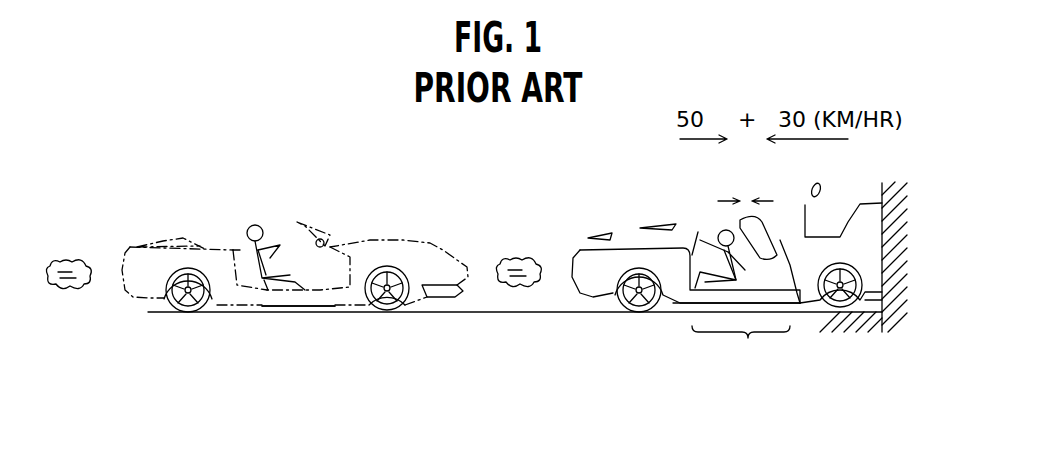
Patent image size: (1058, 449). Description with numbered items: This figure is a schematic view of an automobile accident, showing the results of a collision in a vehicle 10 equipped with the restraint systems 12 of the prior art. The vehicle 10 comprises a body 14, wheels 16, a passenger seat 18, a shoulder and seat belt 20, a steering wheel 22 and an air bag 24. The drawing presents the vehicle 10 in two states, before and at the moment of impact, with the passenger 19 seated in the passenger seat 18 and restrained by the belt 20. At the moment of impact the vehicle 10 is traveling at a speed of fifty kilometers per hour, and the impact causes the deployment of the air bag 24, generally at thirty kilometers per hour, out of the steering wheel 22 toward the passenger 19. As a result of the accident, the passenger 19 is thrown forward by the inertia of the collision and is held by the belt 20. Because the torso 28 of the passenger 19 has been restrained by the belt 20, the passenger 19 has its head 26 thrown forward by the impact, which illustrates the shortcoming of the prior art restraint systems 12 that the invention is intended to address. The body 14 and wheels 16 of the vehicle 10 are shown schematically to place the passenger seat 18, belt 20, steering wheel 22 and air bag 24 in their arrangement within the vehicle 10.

The vehicle 10 is at (433, 237).
The restraint systems 12 is at (741, 350).
The body 14 is at (332, 300).
The wheels 16 is at (155, 313).
The passenger seat 18 is at (237, 247).
The passenger 19 is at (260, 233).
The shoulder and seat belt 20 is at (260, 240).
The steering wheel 22 is at (323, 243).
The air bag 24 is at (800, 313).
The head 26 is at (253, 220).
The torso 28 is at (270, 280).